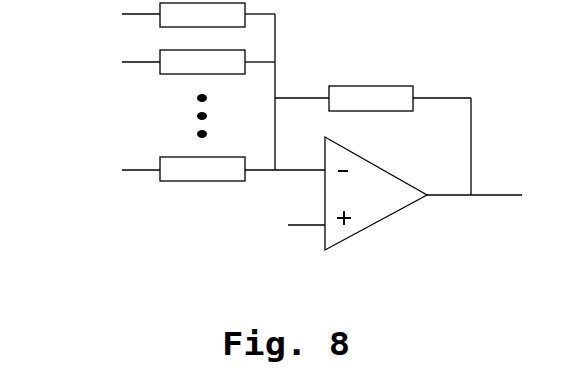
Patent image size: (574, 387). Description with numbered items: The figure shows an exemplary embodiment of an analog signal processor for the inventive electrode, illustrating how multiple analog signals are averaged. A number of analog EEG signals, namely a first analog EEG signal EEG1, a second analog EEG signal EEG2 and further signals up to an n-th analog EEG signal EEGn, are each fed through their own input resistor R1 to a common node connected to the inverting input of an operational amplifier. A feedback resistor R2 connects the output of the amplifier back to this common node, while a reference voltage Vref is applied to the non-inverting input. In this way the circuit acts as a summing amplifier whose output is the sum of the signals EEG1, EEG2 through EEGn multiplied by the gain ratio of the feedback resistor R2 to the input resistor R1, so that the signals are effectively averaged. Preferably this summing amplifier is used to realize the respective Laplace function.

The input resistor R1 is at (202, 93).
The feedback resistor R2 is at (373, 140).
The first analog EEG signal EEG1 is at (101, 15).
The second analog EEG signal EEG2 is at (101, 63).
The n-th analog EEG signal EEGn is at (101, 171).
The reference voltage Vref is at (275, 225).